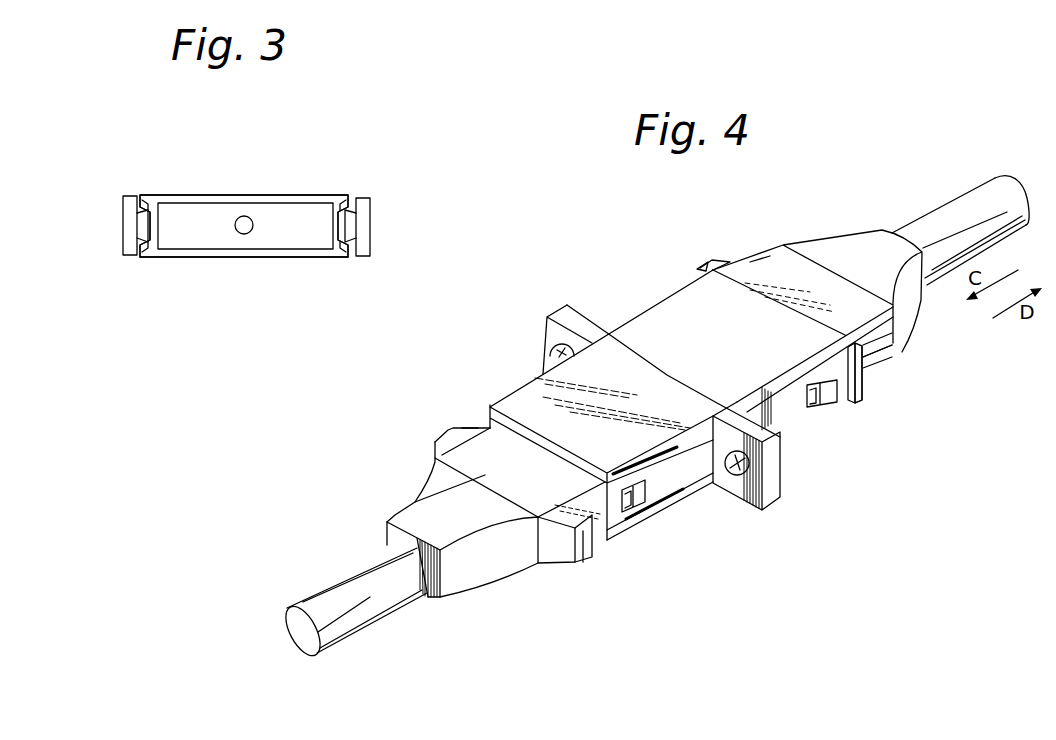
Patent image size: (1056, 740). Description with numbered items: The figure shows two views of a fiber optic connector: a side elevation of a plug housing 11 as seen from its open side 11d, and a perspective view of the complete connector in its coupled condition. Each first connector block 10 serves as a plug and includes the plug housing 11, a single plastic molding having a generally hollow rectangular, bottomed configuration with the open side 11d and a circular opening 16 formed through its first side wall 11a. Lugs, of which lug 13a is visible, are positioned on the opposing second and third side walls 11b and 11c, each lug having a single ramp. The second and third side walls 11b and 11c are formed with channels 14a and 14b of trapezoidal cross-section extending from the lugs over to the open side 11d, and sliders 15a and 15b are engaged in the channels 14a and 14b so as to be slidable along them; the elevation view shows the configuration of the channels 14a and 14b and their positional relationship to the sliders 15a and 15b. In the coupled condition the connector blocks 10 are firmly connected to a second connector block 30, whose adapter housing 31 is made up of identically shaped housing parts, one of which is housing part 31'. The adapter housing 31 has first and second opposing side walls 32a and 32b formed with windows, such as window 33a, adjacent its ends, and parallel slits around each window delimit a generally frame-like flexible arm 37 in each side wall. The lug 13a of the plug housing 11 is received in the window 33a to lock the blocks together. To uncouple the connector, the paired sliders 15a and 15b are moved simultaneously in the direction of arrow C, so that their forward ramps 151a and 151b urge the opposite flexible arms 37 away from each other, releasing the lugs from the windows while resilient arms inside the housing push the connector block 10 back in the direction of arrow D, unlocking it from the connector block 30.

In FIG. 3, the first connector block 10 is at (270, 150).
In FIG. 4, the first connector block 10 is at (784, 236).
In FIG. 3, the plug housing 11 is at (215, 195).
In FIG. 4, the plug housing 11 is at (808, 268).
In FIG. 3, the first side wall 11a is at (303, 245).
In FIG. 4, the second side wall 11b is at (893, 362).
In FIG. 4, the third side wall 11c is at (758, 262).
In FIG. 3, the open side 11d is at (197, 253).
In FIG. 4, the lug 13a is at (628, 505).
In FIG. 3, the channel 14a is at (150, 195).
In FIG. 4, the channel 14a is at (876, 372).
In FIG. 3, the channel 14b is at (342, 200).
In FIG. 3, the slider 15a is at (125, 230).
In FIG. 4, the slider 15a is at (557, 557).
In FIG. 3, the slider 15b is at (372, 232).
In FIG. 4, the slider 15b is at (717, 262).
In FIG. 4, the forward ramp 151a is at (590, 543).
In FIG. 4, the forward ramp 151b is at (470, 425).
In FIG. 3, the circular opening 16 is at (247, 218).
In FIG. 4, the second connector block 30 is at (556, 298).
In FIG. 4, the adapter housing 31 is at (601, 338).
In FIG. 4, the housing part 31' is at (673, 358).
In FIG. 4, the first side wall 32a is at (700, 478).
In FIG. 4, the second side wall 32b is at (508, 390).
In FIG. 4, the window 33a is at (828, 407).
In FIG. 4, the flexible arm 37 is at (700, 266).